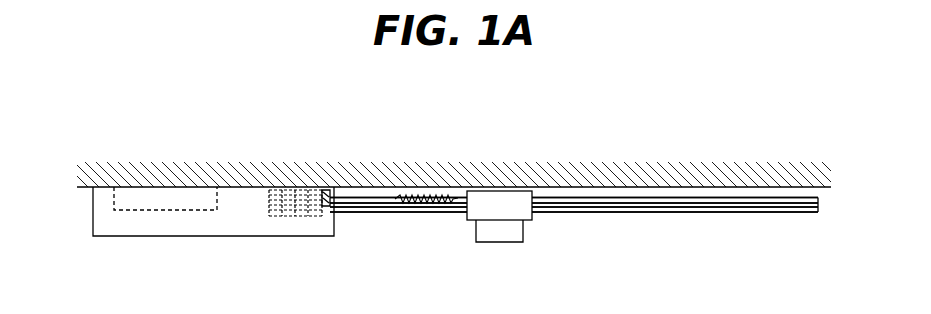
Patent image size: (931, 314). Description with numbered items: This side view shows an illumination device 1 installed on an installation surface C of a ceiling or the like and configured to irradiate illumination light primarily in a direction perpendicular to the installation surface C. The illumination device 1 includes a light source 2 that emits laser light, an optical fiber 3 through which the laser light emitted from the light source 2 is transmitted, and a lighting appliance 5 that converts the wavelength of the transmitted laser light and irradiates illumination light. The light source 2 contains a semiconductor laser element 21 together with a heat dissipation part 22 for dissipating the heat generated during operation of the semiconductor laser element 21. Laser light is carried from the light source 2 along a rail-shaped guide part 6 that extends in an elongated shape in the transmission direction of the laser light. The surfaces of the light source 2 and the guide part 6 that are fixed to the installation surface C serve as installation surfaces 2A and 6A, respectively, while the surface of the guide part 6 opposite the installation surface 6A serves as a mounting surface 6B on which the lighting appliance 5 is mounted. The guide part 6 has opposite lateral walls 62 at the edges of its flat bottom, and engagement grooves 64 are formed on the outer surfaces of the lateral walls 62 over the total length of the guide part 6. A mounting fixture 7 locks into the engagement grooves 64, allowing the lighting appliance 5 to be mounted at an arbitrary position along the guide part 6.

The illumination device 1 is at (96, 128).
The light source 2 is at (93, 210).
The installation surface 2A is at (212, 187).
The heat dissipation part 22 is at (300, 216).
The semiconductor laser element 21 is at (335, 200).
The optical fiber 3 is at (410, 208).
The mounting fixture 7 is at (503, 203).
The lighting appliance 5 is at (500, 234).
The guide part 6 is at (598, 213).
The installation surface 6A is at (669, 188).
The mounting surface 6B is at (690, 212).
The lateral walls 62 is at (762, 196).
The engagement grooves 64 is at (788, 204).
The installation surface C is at (455, 154).